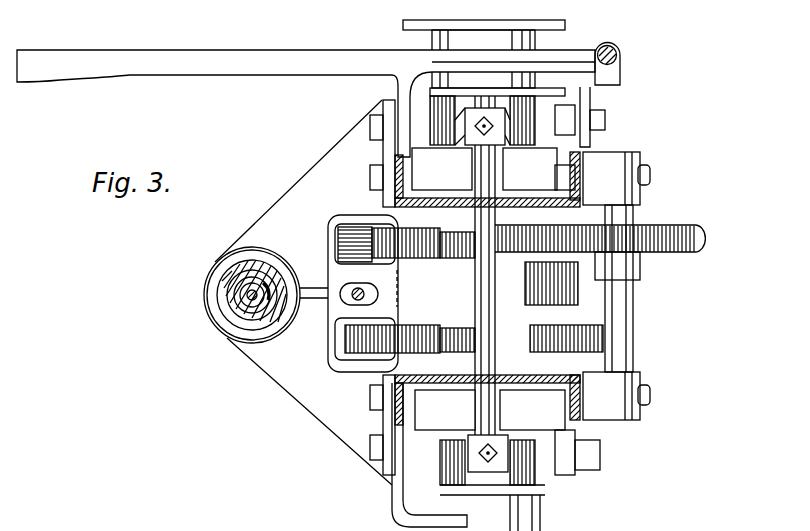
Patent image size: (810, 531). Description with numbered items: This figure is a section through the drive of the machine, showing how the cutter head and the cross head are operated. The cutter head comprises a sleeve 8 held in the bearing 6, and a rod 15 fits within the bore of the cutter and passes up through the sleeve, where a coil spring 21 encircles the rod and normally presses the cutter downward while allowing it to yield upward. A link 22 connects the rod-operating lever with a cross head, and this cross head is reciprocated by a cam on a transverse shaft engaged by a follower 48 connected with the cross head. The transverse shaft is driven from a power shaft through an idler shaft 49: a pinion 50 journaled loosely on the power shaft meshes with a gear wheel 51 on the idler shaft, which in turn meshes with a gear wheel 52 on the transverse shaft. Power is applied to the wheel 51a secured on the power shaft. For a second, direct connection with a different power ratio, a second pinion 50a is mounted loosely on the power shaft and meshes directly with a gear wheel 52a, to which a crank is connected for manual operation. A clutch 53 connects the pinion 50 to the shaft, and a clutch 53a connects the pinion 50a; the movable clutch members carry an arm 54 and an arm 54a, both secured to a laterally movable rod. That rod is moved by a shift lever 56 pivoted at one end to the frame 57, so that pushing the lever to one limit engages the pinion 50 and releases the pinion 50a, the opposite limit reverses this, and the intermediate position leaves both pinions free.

The bearing 6 is at (205, 283).
The sleeve 8 is at (230, 268).
The rod 15 is at (250, 302).
The coil spring 21 is at (232, 305).
The link 22 is at (352, 298).
The follower 48 is at (577, 307).
The idler shaft 49 is at (633, 305).
The pinion 50 is at (457, 245).
The second pinion 50a is at (445, 345).
The gear wheel 51 is at (690, 225).
The wheel 51a is at (740, 498).
The gear wheel 52 is at (380, 237).
The gear wheel 52a is at (345, 345).
The clutch 53 is at (543, 160).
The clutch 53a is at (547, 415).
The arm 54 is at (463, 125).
The arm 54a is at (505, 465).
The shift lever 56 is at (308, 66).
The frame 57 is at (619, 50).